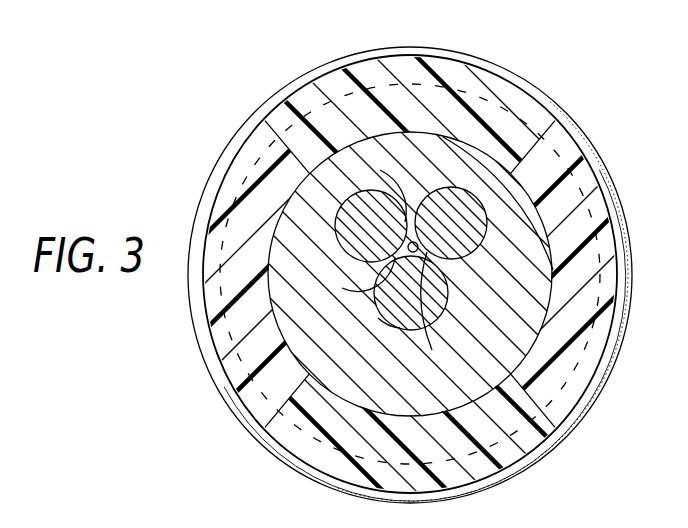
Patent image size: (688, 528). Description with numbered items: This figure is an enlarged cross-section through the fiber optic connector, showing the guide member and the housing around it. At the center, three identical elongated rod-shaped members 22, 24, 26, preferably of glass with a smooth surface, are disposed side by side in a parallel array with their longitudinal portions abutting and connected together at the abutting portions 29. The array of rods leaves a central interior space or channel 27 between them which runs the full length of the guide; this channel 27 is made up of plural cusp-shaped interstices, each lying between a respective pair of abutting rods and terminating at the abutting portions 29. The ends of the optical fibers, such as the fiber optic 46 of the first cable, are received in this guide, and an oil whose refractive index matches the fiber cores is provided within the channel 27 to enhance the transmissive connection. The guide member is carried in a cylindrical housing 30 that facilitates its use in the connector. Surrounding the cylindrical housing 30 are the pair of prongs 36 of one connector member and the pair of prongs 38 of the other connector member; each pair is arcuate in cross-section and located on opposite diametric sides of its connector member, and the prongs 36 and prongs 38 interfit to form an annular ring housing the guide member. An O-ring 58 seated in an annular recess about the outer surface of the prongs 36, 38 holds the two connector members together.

The O-ring 58 is at (333, 60).
The prongs 36 is at (546, 110).
The prongs 38 is at (221, 172).
The cylindrical housing 30 is at (357, 393).
The rod-shaped member 22 is at (340, 247).
The rod-shaped member 24 is at (420, 190).
The rod-shaped member 26 is at (442, 286).
The fiber optic 46 is at (397, 318).
The interior space or channel 27 is at (413, 247).
The abutting portions 29 is at (375, 266).